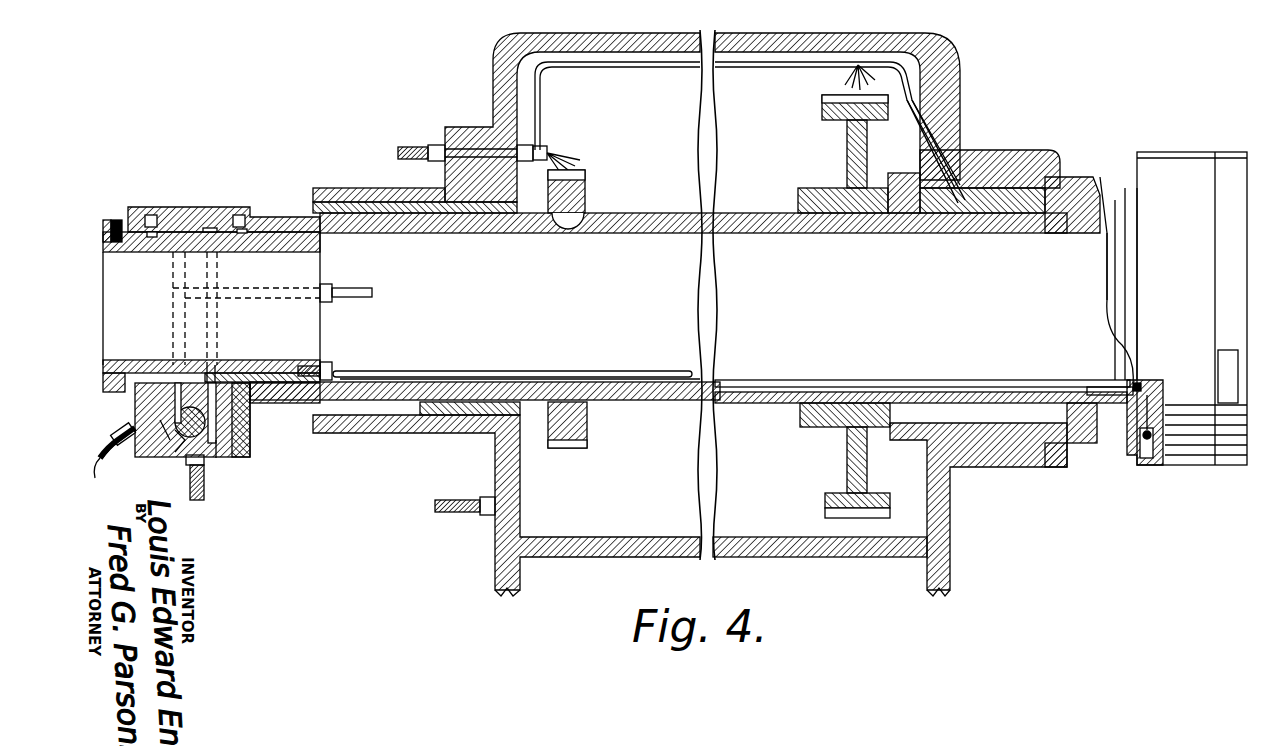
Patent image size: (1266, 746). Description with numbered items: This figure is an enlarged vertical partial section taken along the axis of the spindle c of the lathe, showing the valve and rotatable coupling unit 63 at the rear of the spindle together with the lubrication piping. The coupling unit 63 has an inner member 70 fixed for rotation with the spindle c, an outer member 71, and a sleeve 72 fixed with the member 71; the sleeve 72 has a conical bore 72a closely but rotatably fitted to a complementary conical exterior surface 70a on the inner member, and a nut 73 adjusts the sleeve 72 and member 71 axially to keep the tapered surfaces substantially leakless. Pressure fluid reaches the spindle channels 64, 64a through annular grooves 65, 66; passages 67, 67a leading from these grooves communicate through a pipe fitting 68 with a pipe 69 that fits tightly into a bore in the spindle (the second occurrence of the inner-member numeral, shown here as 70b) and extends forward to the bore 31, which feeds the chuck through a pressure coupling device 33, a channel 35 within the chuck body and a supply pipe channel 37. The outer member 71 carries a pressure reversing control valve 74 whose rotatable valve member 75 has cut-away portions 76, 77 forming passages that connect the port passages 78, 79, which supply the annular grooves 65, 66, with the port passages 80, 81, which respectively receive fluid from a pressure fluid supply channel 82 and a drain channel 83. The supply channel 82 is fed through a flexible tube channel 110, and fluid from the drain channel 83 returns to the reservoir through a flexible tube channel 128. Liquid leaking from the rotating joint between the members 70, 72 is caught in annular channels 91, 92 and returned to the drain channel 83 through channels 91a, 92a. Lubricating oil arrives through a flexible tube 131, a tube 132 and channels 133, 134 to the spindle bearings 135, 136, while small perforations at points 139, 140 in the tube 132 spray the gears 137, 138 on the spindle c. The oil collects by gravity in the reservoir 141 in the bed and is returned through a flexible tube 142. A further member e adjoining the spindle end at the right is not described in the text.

The nut 73 is at (110, 220).
The outer member 71 is at (185, 212).
The sleeve 72 is at (152, 215).
The conical bore 72a is at (240, 215).
The conical exterior surface 70a is at (210, 228).
The inner member 70 is at (236, 254).
The annular channel 91 is at (152, 238).
The annular channel 92 is at (242, 236).
The annular groove 66 is at (180, 332).
The annular groove 65 is at (214, 332).
The passage 67a is at (262, 300).
The passage 67 is at (262, 366).
The port passage 80 is at (207, 366).
The cut-away portion 77 is at (135, 409).
The valve and rotatable coupling unit 63 is at (262, 452).
The rotatable valve member 75 is at (205, 420).
The cut-away portion 76 is at (216, 432).
The channel 91a is at (175, 412).
The channel 92a is at (250, 408).
The port passage 78 is at (246, 452).
The pressure reversing control valve 74 is at (216, 458).
The port passage 81 is at (200, 465).
The flexible tube channel 128 is at (194, 500).
The drain channel 83 is at (178, 455).
The port passage 79 is at (168, 442).
The pressure fluid supply channel 82 is at (128, 458).
The flexible tube channel 110 is at (96, 478).
The channel 64a is at (360, 297).
The pipe fitting 68 is at (328, 362).
The channel 64 is at (370, 371).
The pipe 69 is at (482, 379).
The spindle c is at (330, 236).
The channel 133 is at (470, 172).
The spindle bearing 135 is at (365, 200).
The flexible tube 131 is at (414, 147).
The spray point 139 is at (552, 153).
The tube 132 is at (628, 68).
The gear 137 is at (585, 190).
The reservoir 141 is at (506, 499).
The flexible tube 142 is at (462, 513).
The gear 138 is at (822, 100).
The spray point 140 is at (855, 68).
The spindle bearing 136 is at (1010, 190).
The channel 134 is at (962, 160).
The lower support 70b is at (868, 392).
The channel 31 is at (1108, 380).
The pressure coupling device 33 is at (1138, 383).
The supply pipe channel 37 is at (1138, 440).
The channel 35 is at (1143, 435).
The cylinder e is at (1162, 180).